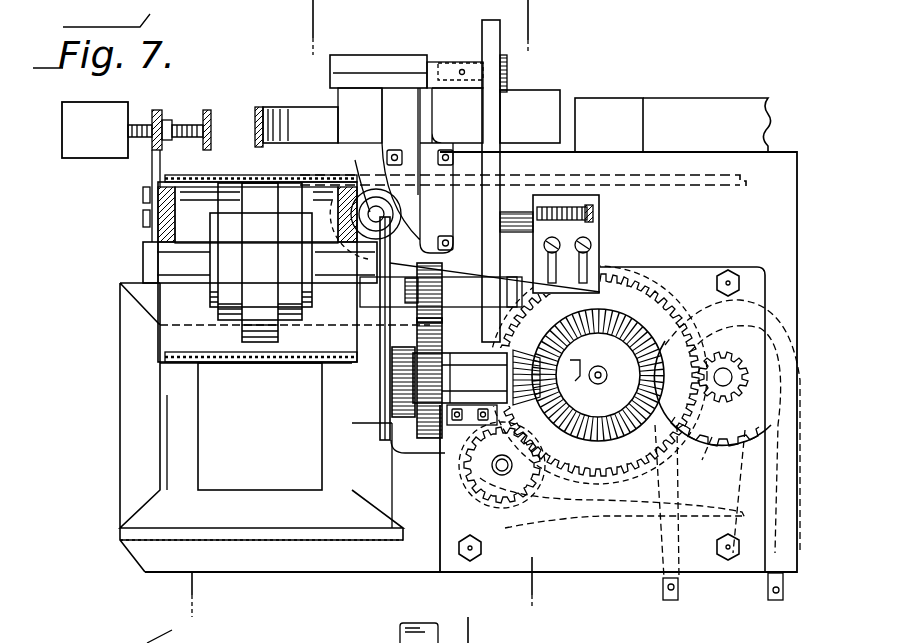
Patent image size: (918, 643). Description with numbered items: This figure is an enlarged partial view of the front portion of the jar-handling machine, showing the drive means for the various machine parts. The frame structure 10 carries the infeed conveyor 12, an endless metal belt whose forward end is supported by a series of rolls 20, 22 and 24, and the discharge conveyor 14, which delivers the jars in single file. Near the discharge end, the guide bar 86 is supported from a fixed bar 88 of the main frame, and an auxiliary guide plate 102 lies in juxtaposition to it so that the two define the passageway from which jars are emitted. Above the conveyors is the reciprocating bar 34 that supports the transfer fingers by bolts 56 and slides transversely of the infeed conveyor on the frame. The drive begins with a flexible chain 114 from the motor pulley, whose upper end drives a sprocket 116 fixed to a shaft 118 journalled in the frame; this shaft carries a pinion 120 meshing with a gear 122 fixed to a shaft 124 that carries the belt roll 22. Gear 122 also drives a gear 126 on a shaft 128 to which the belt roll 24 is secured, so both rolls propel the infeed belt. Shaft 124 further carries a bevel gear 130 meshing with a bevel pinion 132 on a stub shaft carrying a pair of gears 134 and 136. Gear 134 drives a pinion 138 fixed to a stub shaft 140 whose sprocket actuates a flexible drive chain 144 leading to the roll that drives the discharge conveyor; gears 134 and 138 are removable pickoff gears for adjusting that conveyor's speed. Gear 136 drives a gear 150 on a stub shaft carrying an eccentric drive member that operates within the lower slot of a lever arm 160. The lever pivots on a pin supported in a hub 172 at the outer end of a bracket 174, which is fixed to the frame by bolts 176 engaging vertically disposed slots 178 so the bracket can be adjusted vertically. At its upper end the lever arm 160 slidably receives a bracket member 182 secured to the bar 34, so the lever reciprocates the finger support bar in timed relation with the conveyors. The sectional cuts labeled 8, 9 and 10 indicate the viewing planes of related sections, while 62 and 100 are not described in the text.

The motor 100 is at (93, 148).
The fixed bar 88 is at (160, 111).
The guide bar 86 is at (205, 110).
The auxiliary guide plate 102 is at (267, 108).
The cylinder 62 is at (295, 113).
The frame structure 10 is at (160, 616).
The reciprocating bar 34 is at (363, 80).
The bracket member 182 is at (427, 62).
The section line 8 is at (517, 584).
The lever arm 160 is at (500, 115).
The discharge conveyor 14 is at (230, 178).
The roll 20 is at (380, 148).
The hub 172 is at (517, 200).
The bracket 174 is at (598, 199).
The bolts 176 is at (590, 243).
The infeed conveyor 12 is at (707, 183).
The vertically disposed slots 178 is at (590, 275).
The roll 22 is at (340, 252).
The shaft 118 is at (720, 343).
The gear 150 is at (400, 300).
The bevel gear 130 is at (572, 352).
The shaft 124 is at (604, 377).
The bevel pinion 132 is at (589, 386).
The flexible drive chain 144 is at (380, 332).
The stub shaft 140 is at (392, 375).
The pinion 138 is at (405, 400).
The gear 134 is at (402, 440).
The gear 136 is at (428, 440).
The gear 126 is at (538, 488).
The gear 122 is at (620, 482).
The pinion 120 is at (715, 483).
The sprocket 116 is at (720, 506).
The roll 24 is at (487, 530).
The shaft 128 is at (503, 467).
The flexible chain 114 is at (667, 598).
The bolts 56 is at (717, 608).
The section line 9 is at (507, 635).